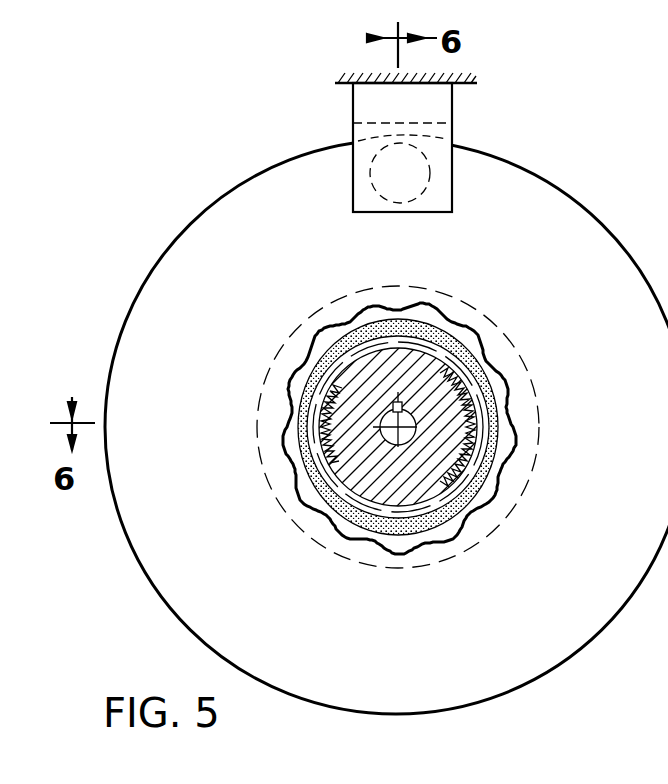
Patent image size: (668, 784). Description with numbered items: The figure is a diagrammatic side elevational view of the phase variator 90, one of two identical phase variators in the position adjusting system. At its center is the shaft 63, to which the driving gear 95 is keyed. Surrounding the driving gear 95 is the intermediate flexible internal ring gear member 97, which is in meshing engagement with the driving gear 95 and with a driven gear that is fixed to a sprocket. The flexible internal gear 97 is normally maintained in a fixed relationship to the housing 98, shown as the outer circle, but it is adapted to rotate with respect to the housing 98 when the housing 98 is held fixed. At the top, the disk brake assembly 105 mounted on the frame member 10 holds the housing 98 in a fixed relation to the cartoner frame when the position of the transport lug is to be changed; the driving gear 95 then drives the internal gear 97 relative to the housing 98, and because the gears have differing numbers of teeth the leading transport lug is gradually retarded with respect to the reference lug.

The support wall 10 is at (472, 78).
The disk brake assembly 105 is at (452, 132).
The housing 98 is at (480, 291).
The driving gear 95 is at (497, 394).
The flexible internal ring gear member 97 is at (493, 424).
The shaft 63 is at (398, 442).
The phase variator 90 is at (128, 630).